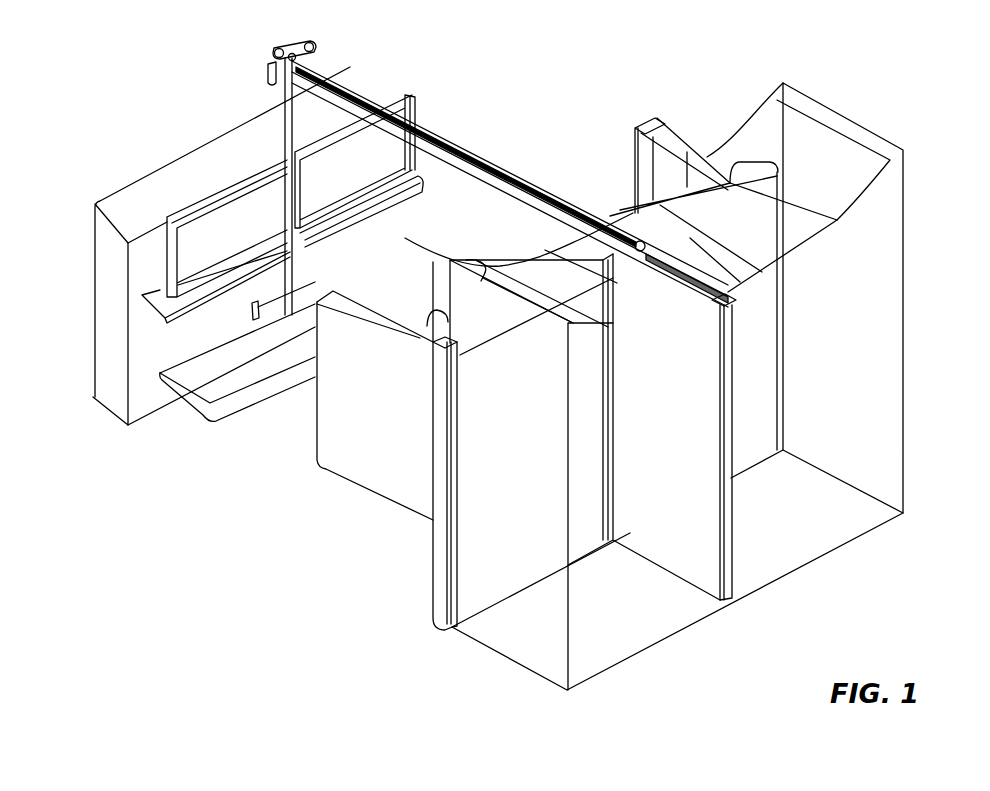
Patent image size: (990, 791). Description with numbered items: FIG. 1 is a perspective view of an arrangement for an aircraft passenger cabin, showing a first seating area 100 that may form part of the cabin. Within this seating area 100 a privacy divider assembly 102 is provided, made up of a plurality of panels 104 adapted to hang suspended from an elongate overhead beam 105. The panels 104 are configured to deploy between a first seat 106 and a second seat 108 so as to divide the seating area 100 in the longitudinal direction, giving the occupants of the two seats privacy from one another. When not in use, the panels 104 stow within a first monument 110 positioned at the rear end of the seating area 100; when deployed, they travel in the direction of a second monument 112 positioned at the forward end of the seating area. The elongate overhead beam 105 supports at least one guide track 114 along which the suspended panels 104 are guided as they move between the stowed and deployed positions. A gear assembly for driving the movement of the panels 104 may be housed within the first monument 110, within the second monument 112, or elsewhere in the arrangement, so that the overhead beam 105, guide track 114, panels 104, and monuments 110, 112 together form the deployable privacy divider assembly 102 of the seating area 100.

The first seating area 100 is at (534, 353).
The privacy divider assembly 102 is at (478, 151).
The panels 104 is at (697, 570).
The elongate overhead beam 105 is at (444, 140).
The first seat 106 is at (613, 190).
The second seat 108 is at (403, 526).
The first monument 110 is at (878, 332).
The second monument 112 is at (162, 182).
The guide track 114 is at (370, 108).